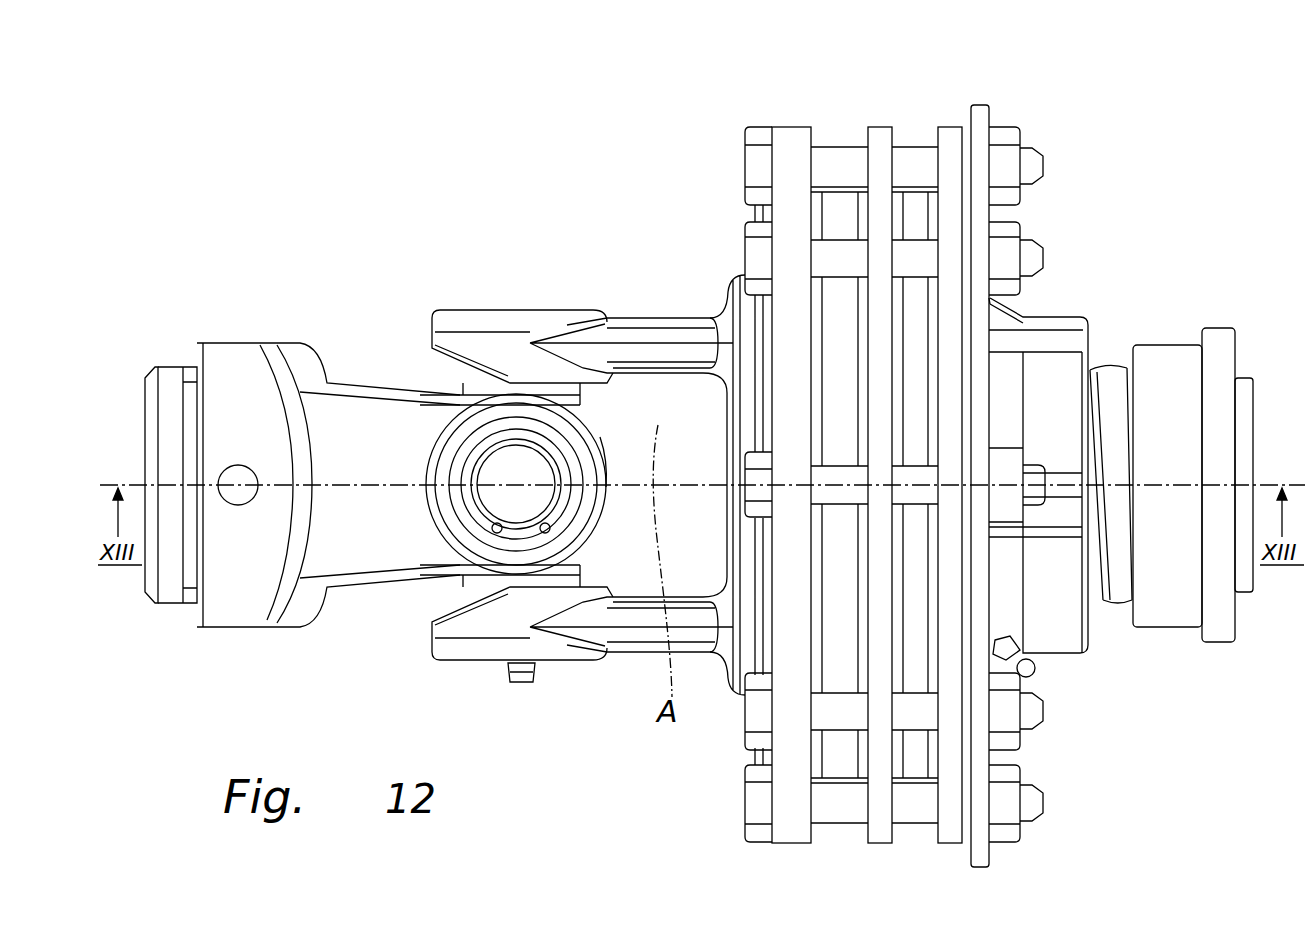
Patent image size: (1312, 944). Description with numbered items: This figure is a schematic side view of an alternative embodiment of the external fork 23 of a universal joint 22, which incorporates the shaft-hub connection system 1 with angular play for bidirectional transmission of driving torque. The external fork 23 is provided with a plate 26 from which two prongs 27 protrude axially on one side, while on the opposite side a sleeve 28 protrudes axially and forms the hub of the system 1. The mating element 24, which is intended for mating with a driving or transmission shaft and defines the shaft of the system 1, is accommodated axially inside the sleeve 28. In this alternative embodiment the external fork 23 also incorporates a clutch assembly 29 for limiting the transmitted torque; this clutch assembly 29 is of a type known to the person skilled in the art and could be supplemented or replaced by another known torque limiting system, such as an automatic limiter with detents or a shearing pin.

The shaft-hub connection system 1 is at (1062, 627).
The universal joint 22 is at (438, 298).
The external fork 23 is at (682, 298).
The mating element 24 is at (1110, 376).
The plate 26 is at (727, 310).
The prongs 27 is at (578, 325).
The sleeve 28 is at (1065, 312).
The clutch assembly 29 is at (890, 118).